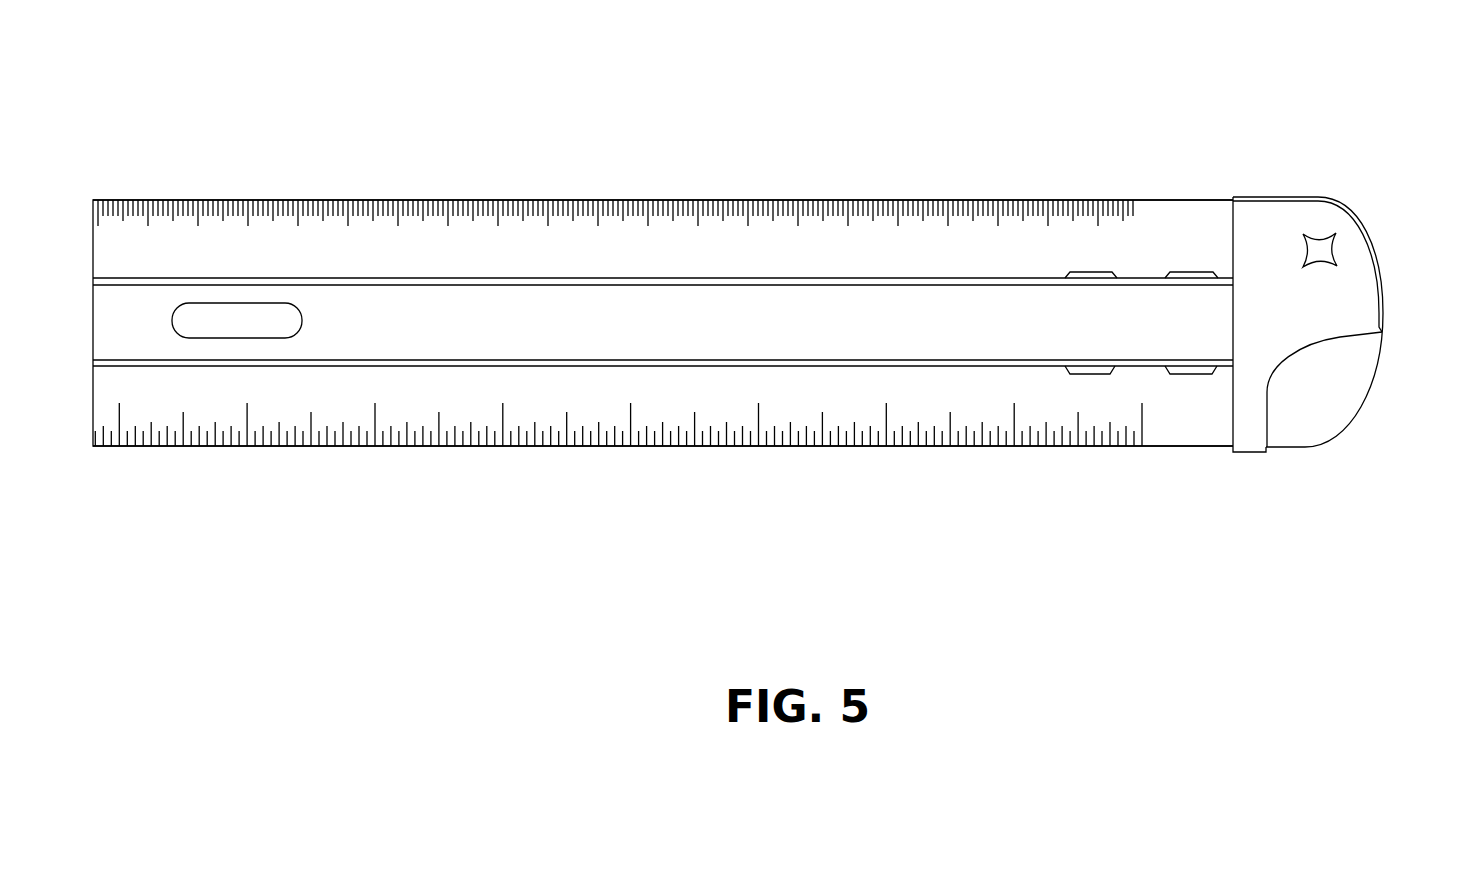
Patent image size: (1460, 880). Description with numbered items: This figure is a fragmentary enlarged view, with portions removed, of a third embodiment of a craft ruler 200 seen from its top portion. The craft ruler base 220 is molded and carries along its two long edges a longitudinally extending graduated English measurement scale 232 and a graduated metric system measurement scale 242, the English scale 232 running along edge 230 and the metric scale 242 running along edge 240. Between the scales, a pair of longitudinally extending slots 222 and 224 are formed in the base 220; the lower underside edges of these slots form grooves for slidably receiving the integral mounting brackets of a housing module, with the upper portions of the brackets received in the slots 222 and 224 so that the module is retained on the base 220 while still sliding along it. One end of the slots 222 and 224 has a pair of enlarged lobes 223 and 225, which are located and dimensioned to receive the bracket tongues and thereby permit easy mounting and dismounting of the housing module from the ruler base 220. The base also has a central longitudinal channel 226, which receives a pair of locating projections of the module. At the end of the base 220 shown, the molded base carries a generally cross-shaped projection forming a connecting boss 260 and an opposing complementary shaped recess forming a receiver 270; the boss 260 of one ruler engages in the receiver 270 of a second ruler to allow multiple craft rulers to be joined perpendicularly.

The craft ruler 200 is at (484, 122).
The craft ruler base 220 is at (1208, 447).
The longitudinal slot 222 is at (1030, 283).
The enlarged lobe 223 is at (1193, 273).
The longitudinal slot 224 is at (1037, 363).
The enlarged lobe 225 is at (1092, 375).
The central longitudinal channel 226 is at (237, 317).
The edge 230 is at (576, 447).
The English measurement scale 232 is at (845, 456).
The edge 240 is at (615, 199).
The metric system measurement scale 242 is at (819, 196).
The connecting boss 260 is at (1335, 410).
The receiver 270 is at (1325, 243).